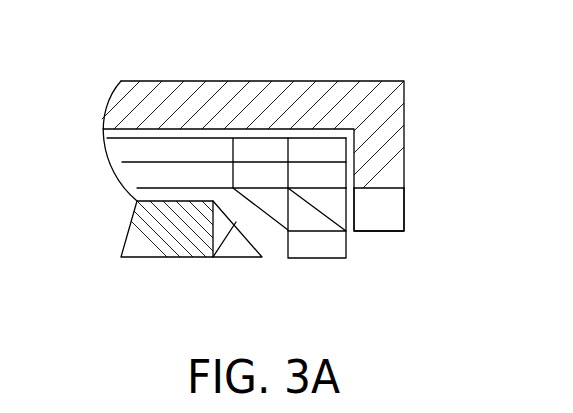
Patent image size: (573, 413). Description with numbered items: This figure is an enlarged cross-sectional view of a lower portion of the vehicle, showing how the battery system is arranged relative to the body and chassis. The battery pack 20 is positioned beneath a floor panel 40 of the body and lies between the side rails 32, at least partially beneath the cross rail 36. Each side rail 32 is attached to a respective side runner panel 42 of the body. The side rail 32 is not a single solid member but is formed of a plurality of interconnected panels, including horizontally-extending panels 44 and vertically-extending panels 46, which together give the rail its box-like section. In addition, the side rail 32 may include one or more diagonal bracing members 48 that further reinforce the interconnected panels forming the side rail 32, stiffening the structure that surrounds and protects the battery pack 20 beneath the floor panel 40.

The battery pack 20 is at (147, 263).
The side rail 32 is at (320, 258).
The cross rail 36 is at (148, 175).
The floor panel 40 is at (273, 88).
The side runner panel 42 is at (383, 212).
The horizontally-extending panel 44 is at (327, 152).
The vertically-extending panel 46 is at (290, 236).
The diagonal bracing member 48 is at (260, 223).